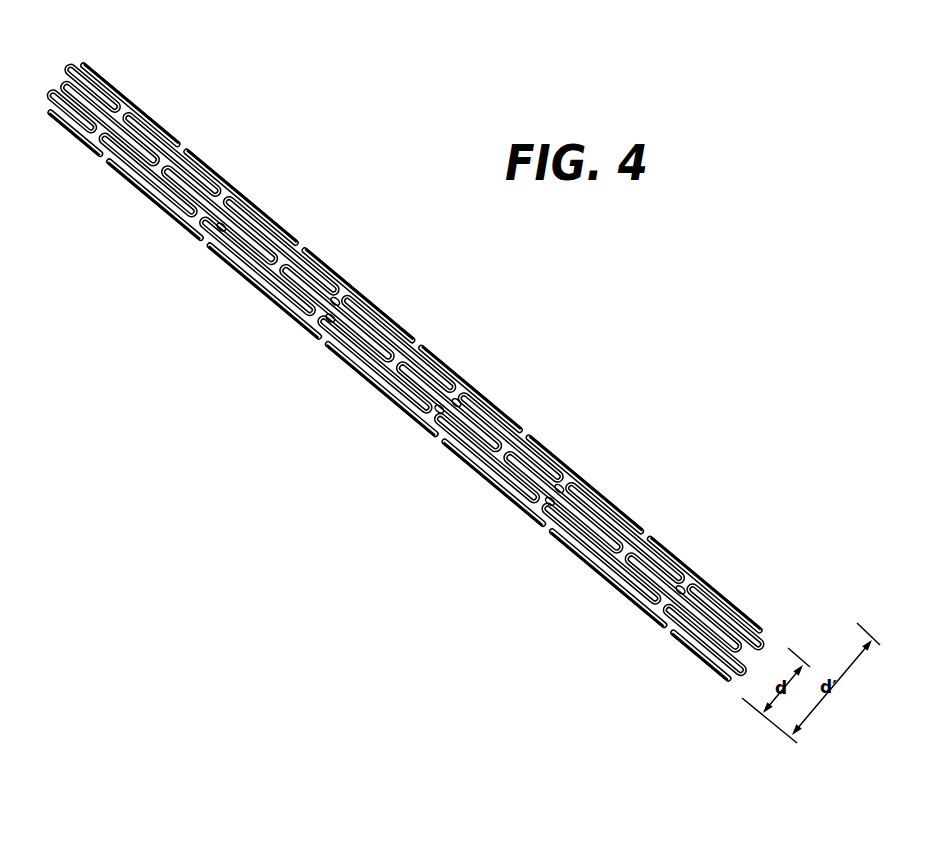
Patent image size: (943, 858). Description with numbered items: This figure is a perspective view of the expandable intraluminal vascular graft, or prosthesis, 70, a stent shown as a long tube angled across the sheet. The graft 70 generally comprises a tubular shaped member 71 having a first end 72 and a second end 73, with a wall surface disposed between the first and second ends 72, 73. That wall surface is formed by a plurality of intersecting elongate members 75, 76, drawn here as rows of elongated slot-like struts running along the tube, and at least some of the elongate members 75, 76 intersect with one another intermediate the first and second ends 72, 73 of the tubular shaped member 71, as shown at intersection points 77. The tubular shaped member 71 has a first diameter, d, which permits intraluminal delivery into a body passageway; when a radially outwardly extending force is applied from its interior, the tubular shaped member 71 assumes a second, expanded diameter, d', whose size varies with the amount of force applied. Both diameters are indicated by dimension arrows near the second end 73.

The expandable intraluminal vascular graft 70 is at (351, 262).
The tubular shaped member 71 is at (521, 423).
The first end 72 is at (63, 73).
The second end 73 is at (772, 648).
The elongate member 75 is at (430, 392).
The elongate member 76 is at (221, 227).
The intersection point 77 is at (456, 404).